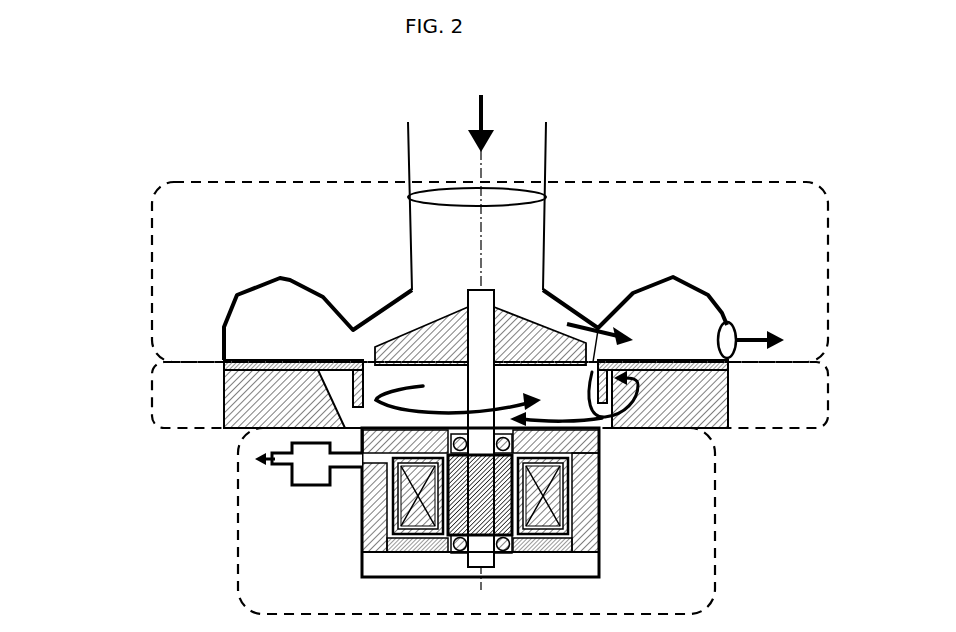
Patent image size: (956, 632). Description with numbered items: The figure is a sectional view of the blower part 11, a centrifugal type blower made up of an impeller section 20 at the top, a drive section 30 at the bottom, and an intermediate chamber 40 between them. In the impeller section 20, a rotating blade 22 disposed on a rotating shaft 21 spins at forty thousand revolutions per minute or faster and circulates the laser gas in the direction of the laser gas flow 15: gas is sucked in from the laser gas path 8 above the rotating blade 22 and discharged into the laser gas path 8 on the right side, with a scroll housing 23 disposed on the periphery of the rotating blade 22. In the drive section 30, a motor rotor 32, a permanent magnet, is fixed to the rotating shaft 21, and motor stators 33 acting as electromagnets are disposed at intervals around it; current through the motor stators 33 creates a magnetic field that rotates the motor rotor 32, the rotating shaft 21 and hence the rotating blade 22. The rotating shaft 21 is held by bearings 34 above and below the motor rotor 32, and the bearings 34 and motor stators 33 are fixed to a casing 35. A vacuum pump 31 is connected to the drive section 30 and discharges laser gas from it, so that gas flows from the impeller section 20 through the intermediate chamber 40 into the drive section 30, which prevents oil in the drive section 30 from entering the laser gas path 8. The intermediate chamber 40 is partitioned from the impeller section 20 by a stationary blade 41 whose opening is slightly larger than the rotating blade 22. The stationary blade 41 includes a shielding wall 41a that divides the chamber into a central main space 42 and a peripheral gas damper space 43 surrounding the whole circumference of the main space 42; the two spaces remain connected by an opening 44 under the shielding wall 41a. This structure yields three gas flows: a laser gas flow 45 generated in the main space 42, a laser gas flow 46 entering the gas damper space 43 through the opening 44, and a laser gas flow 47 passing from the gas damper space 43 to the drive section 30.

The laser gas path 8 is at (408, 163).
The blower part 11 is at (297, 82).
The laser gas flow 15 is at (484, 113).
The impeller section 20 is at (166, 185).
The rotating shaft 21 is at (478, 307).
The rotating blade 22 is at (438, 385).
The scroll housing 23 is at (290, 283).
The drive section 30 is at (246, 586).
The vacuum pump 31 is at (318, 478).
The motor rotor 32 is at (598, 545).
The motor stators 33 is at (567, 482).
The bearings 34 is at (506, 446).
The casing 35 is at (362, 533).
The intermediate chamber 40 is at (162, 429).
The stationary blade 41 is at (342, 422).
The shielding wall 41a is at (355, 384).
The main space 42 is at (413, 363).
The gas damper space 43 is at (612, 423).
The opening 44 is at (358, 415).
The laser gas flow 45 is at (510, 405).
The laser gas flow 46 is at (636, 385).
The laser gas flow 47 is at (557, 418).